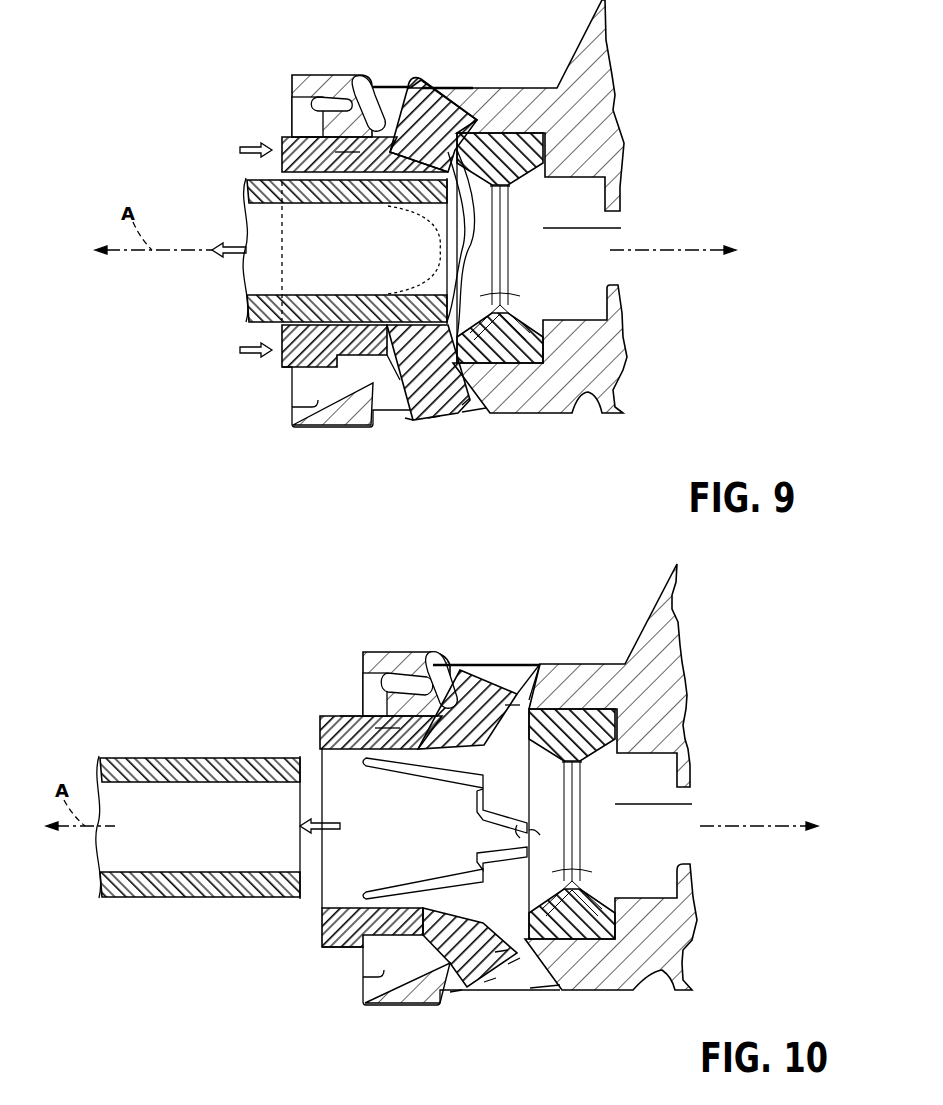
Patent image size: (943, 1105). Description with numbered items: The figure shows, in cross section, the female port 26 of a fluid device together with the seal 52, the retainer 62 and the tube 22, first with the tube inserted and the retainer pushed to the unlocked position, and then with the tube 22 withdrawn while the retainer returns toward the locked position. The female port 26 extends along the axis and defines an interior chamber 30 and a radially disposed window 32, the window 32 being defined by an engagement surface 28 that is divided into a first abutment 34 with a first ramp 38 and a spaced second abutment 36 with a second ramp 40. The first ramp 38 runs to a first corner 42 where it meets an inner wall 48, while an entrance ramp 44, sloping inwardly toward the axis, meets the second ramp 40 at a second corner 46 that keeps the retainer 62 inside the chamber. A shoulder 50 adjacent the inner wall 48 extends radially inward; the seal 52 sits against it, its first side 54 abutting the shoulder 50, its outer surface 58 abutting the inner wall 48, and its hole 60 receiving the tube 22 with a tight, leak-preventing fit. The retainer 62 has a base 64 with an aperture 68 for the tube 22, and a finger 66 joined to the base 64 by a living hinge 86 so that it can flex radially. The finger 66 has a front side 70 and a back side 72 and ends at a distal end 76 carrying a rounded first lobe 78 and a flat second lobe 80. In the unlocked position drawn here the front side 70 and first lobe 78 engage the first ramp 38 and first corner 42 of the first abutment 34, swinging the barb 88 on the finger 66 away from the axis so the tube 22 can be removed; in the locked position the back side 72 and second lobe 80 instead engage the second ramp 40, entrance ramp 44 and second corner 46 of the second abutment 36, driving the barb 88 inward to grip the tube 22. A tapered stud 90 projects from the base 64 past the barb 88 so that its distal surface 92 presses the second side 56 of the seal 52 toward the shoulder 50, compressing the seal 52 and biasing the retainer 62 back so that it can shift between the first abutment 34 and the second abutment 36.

In FIG. 9, the tube 22 is at (247, 180).
In FIG. 10, the tube 22 is at (193, 758).
In FIG. 9, the female port 26 is at (567, 413).
In FIG. 10, the female port 26 is at (643, 990).
In FIG. 10, the engagement surface 28 is at (530, 677).
In FIG. 9, the interior chamber 30 is at (292, 392).
In FIG. 10, the interior chamber 30 is at (363, 977).
In FIG. 9, the window 32 is at (440, 66).
In FIG. 10, the window 32 is at (526, 642).
In FIG. 9, the first abutment 34 is at (478, 84).
In FIG. 10, the first abutment 34 is at (547, 662).
In FIG. 9, the second abutment 36 is at (380, 76).
In FIG. 10, the second abutment 36 is at (448, 655).
In FIG. 9, the first ramp 38 is at (482, 408).
In FIG. 10, the first ramp 38 is at (552, 984).
In FIG. 9, the second ramp 40 is at (380, 413).
In FIG. 10, the second ramp 40 is at (440, 995).
In FIG. 10, the first corner 42 is at (512, 708).
In FIG. 9, the entrance ramp 44 is at (320, 96).
In FIG. 10, the entrance ramp 44 is at (392, 673).
In FIG. 9, the second corner 46 is at (362, 96).
In FIG. 10, the second corner 46 is at (445, 660).
In FIG. 10, the inner wall 48 is at (527, 917).
In FIG. 9, the shoulder 50 is at (543, 340).
In FIG. 10, the shoulder 50 is at (617, 893).
In FIG. 9, the seal 52 is at (537, 153).
In FIG. 10, the seal 52 is at (610, 730).
In FIG. 9, the first side 54 is at (610, 230).
In FIG. 10, the first side 54 is at (617, 795).
In FIG. 9, the second side 56 is at (430, 240).
In FIG. 10, the second side 56 is at (517, 733).
In FIG. 9, the outer surface 58 is at (494, 132).
In FIG. 10, the outer surface 58 is at (576, 690).
In FIG. 9, the hole 60 is at (505, 187).
In FIG. 10, the hole 60 is at (580, 782).
In FIG. 9, the retainer 62 is at (290, 140).
In FIG. 10, the retainer 62 is at (320, 728).
In FIG. 9, the base 64 is at (316, 140).
In FIG. 10, the base 64 is at (350, 717).
In FIG. 9, the finger 66 is at (457, 413).
In FIG. 10, the finger 66 is at (467, 987).
In FIG. 9, the aperture 68 is at (297, 325).
In FIG. 10, the aperture 68 is at (322, 895).
In FIG. 10, the front side 70 is at (502, 950).
In FIG. 9, the back side 72 is at (393, 372).
In FIG. 10, the back side 72 is at (450, 953).
In FIG. 9, the distal end 76 is at (433, 421).
In FIG. 10, the distal end 76 is at (490, 981).
In FIG. 9, the first lobe 78 is at (470, 410).
In FIG. 10, the first lobe 78 is at (515, 962).
In FIG. 9, the second lobe 80 is at (410, 421).
In FIG. 10, the second lobe 80 is at (457, 993).
In FIG. 9, the living hinge 86 is at (347, 150).
In FIG. 10, the living hinge 86 is at (385, 728).
In FIG. 9, the barb 88 is at (390, 356).
In FIG. 10, the barb 88 is at (467, 892).
In FIG. 9, the stud 90 is at (458, 253).
In FIG. 10, the stud 90 is at (528, 850).
In FIG. 9, the distal surface 92 is at (470, 245).
In FIG. 10, the distal surface 92 is at (528, 830).